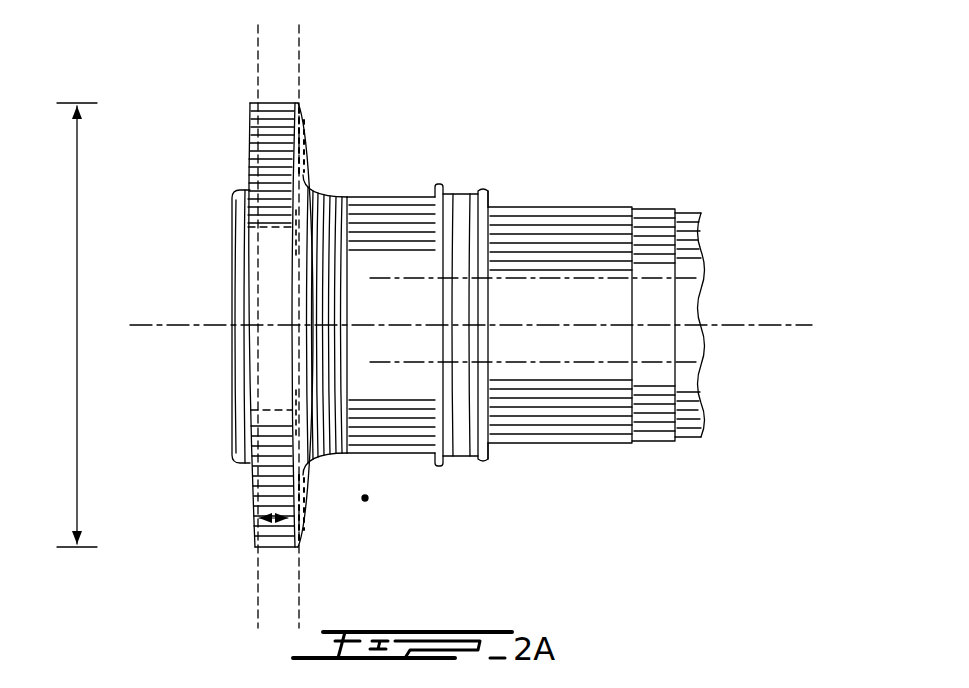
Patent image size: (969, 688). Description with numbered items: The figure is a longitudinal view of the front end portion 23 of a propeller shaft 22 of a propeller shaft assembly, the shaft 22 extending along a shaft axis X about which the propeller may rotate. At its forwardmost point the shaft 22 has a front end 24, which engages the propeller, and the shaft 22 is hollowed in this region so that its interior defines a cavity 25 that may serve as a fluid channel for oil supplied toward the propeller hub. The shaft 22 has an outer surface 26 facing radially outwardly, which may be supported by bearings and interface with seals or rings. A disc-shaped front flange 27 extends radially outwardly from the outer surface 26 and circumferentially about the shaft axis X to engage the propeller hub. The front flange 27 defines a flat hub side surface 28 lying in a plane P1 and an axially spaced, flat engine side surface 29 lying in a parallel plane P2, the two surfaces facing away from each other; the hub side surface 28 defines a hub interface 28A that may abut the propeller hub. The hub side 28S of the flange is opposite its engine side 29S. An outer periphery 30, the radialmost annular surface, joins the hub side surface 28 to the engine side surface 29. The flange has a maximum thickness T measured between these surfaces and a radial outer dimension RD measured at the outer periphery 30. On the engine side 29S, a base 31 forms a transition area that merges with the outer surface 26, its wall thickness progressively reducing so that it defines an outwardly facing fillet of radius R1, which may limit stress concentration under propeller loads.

The propeller shaft 22 is at (748, 116).
The front end portion 23 is at (748, 177).
The front end 24 is at (230, 195).
The cavity 25 is at (230, 387).
The outer surface 26 is at (565, 206).
The front flange 27 is at (305, 104).
The hub side surface 28 is at (285, 295).
The hub interface 28A is at (248, 157).
The hub side 28S is at (247, 108).
The engine side surface 29 is at (300, 140).
The engine side 29S is at (312, 118).
The outer periphery 30 is at (278, 101).
The base 31 is at (338, 182).
The radius R1 is at (332, 462).
The thickness T is at (272, 521).
The radial outer dimension RD is at (78, 325).
The shaft axis X is at (800, 323).
The plane P1 is at (258, 28).
The plane P2 is at (299, 28).